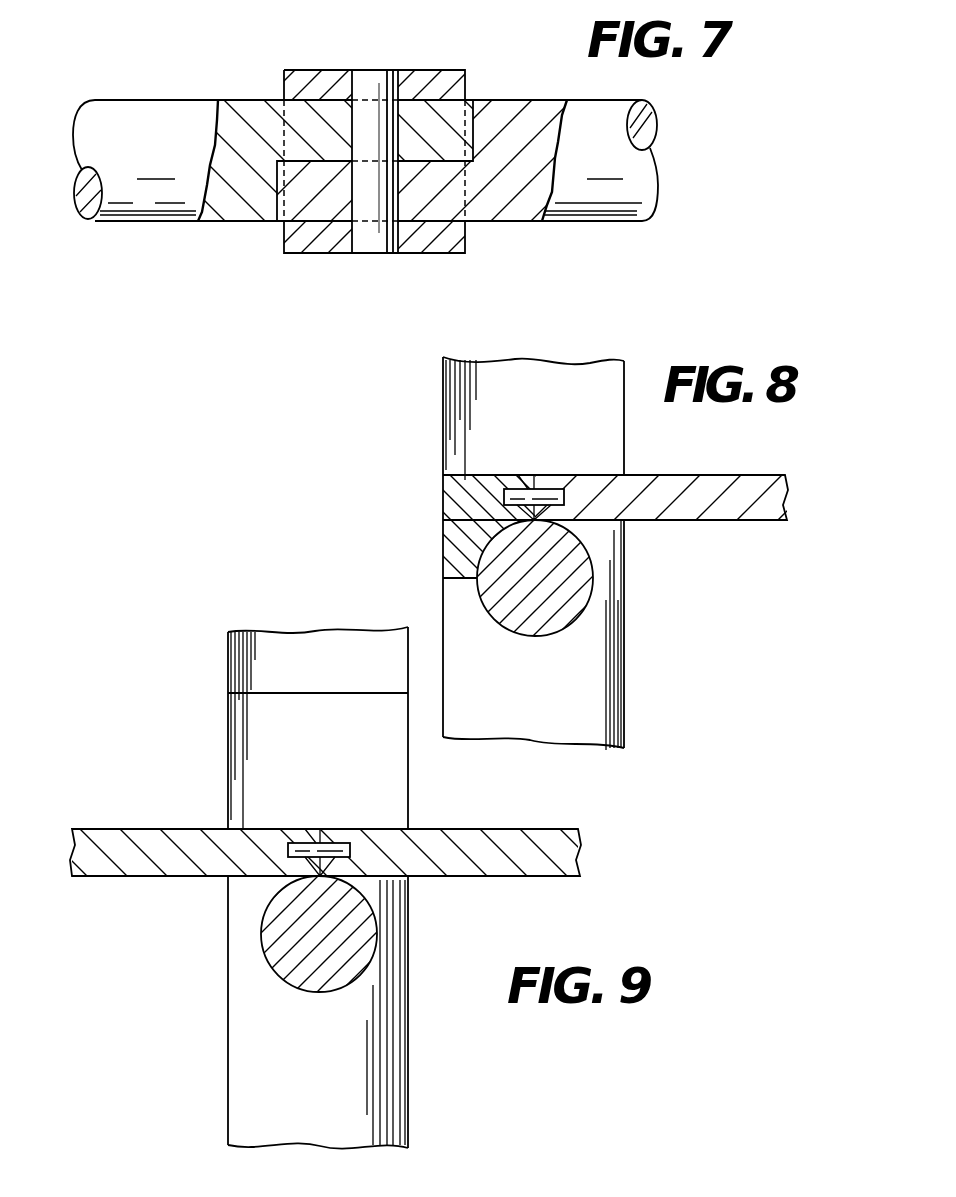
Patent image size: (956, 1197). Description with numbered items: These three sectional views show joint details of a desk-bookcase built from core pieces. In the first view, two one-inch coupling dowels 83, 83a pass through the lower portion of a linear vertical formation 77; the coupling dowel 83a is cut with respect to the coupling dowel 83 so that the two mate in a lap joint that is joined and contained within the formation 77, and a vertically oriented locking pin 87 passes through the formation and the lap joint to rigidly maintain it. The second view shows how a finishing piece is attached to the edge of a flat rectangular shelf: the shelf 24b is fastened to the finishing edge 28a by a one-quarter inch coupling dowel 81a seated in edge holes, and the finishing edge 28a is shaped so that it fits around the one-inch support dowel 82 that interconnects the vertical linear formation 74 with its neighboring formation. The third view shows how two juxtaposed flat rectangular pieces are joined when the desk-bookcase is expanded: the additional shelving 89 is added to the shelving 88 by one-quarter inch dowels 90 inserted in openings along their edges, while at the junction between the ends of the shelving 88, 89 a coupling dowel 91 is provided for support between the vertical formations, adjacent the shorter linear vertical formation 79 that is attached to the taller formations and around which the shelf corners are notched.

In FIG. 7, the locking pin 87 is at (369, 70).
In FIG. 7, the linear vertical formation 77 is at (420, 70).
In FIG. 7, the coupling dowel 83a is at (172, 207).
In FIG. 7, the coupling dowel 83 is at (630, 208).
In FIG. 8, the linear vertical formation 74 is at (572, 370).
In FIG. 8, the coupling dowel 81a is at (560, 495).
In FIG. 8, the finishing edge 28a is at (448, 512).
In FIG. 8, the shelf 24b is at (717, 508).
In FIG. 8, the support dowel 82 is at (580, 570).
In FIG. 9, the additional shelving 89 is at (145, 832).
In FIG. 9, the dowel 90 is at (350, 848).
In FIG. 9, the shelving 88 is at (570, 845).
In FIG. 9, the coupling dowel 91 is at (365, 945).
In FIG. 9, the linear vertical formation 79 is at (397, 1113).